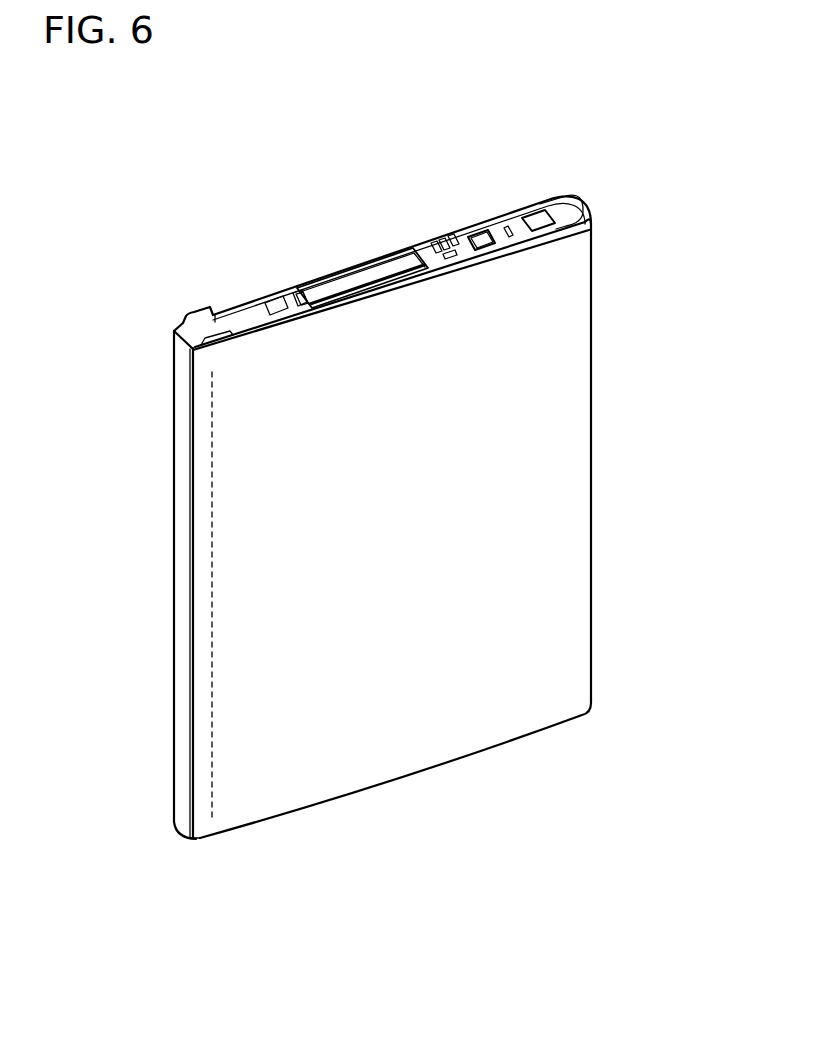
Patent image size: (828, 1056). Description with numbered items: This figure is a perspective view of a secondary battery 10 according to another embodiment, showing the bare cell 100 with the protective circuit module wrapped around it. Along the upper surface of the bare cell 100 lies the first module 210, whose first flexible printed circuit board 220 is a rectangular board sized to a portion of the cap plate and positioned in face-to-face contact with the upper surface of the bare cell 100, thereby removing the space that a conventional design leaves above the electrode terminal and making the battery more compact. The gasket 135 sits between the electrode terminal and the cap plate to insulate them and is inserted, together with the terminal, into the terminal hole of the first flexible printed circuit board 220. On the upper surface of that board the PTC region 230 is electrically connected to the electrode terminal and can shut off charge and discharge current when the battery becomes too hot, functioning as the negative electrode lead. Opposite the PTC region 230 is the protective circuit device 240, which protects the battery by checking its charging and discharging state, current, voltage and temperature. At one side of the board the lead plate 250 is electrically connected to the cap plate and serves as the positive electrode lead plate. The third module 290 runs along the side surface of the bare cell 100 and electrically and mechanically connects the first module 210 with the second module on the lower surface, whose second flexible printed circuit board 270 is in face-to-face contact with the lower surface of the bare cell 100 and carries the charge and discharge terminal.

The secondary battery 10 is at (203, 140).
The bare cell 100 is at (626, 423).
The gasket 135 is at (417, 278).
The first module 210 is at (552, 128).
The first flexible printed circuit board 220 is at (248, 316).
The positive temperature coefficient (PTC) region 230 is at (378, 267).
The protective circuit device 240 is at (508, 218).
The lead plate 250 is at (560, 210).
The second flexible printed circuit board 270 is at (199, 838).
The third module 290 is at (178, 552).